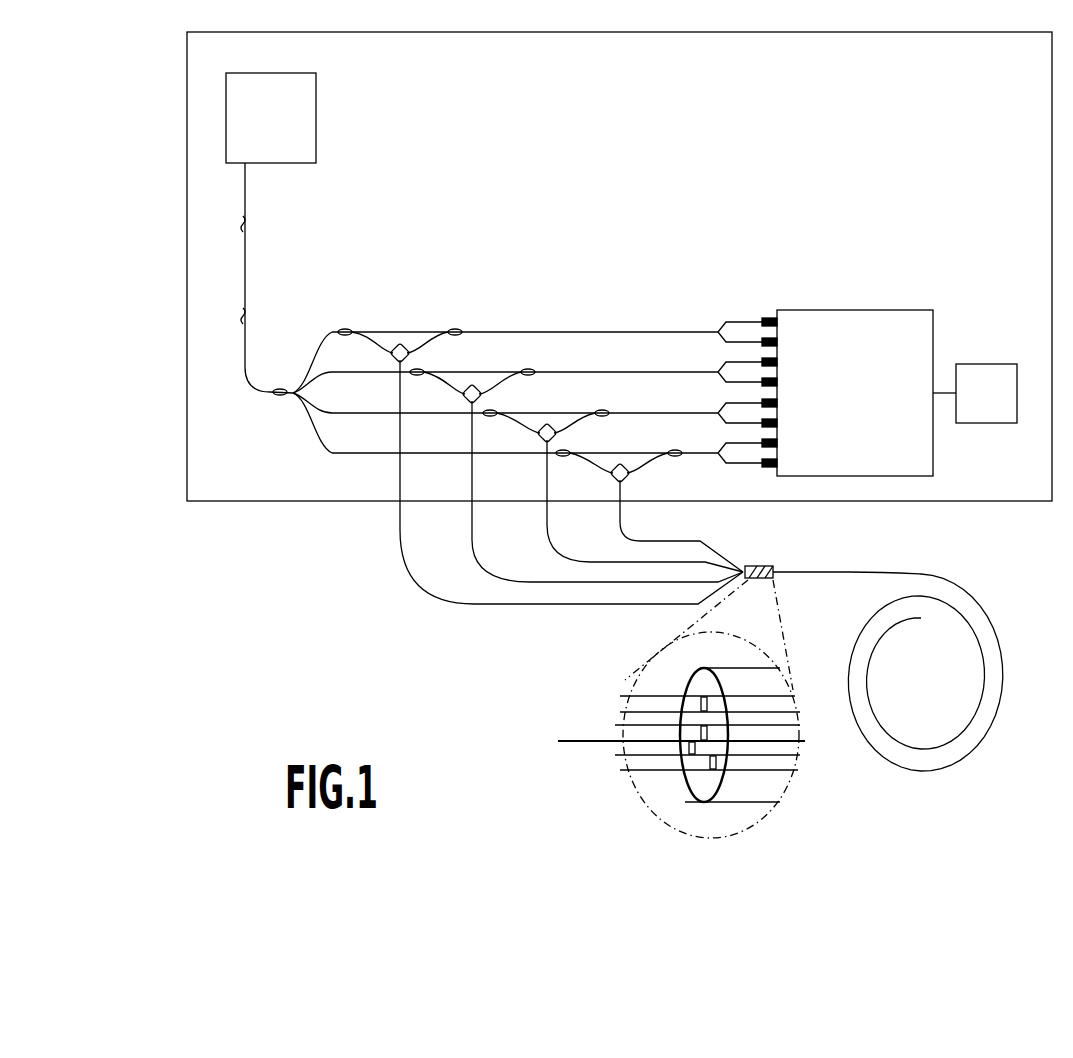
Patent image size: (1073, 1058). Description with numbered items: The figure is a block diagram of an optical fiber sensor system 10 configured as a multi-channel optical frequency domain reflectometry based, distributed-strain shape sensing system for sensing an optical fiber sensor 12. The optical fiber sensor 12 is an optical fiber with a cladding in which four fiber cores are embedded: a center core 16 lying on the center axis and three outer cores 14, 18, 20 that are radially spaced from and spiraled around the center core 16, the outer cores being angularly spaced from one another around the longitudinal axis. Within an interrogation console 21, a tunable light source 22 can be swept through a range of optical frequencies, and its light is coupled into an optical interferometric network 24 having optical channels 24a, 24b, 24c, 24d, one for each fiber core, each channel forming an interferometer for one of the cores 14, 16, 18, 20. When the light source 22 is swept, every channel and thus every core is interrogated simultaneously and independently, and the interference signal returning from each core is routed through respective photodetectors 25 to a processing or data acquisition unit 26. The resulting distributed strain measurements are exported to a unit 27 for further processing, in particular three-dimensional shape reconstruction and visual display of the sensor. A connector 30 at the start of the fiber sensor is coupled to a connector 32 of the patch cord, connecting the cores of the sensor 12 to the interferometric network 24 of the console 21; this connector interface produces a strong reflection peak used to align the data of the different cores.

The optical fiber sensor system 10 is at (293, 598).
The optical fiber sensor 12 is at (1006, 683).
The outer fiber core 14 is at (625, 700).
The center fiber core 16 is at (621, 726).
The outer fiber core 18 is at (621, 754).
The outer fiber core 20 is at (623, 771).
The interrogation console 21 is at (187, 262).
The tunable light source 22 is at (318, 117).
The optical interferometric network 24 is at (298, 418).
The optical channel 24a is at (618, 332).
The optical channel 24b is at (618, 372).
The optical channel 24c is at (618, 412).
The optical channel 24d is at (618, 452).
The photodetectors 25 is at (770, 312).
The data acquisition unit 26 is at (852, 310).
The unit for further processing 27 is at (983, 364).
The connector of the fiber sensor 30 is at (772, 566).
The connector of the patch cord 32 is at (755, 566).